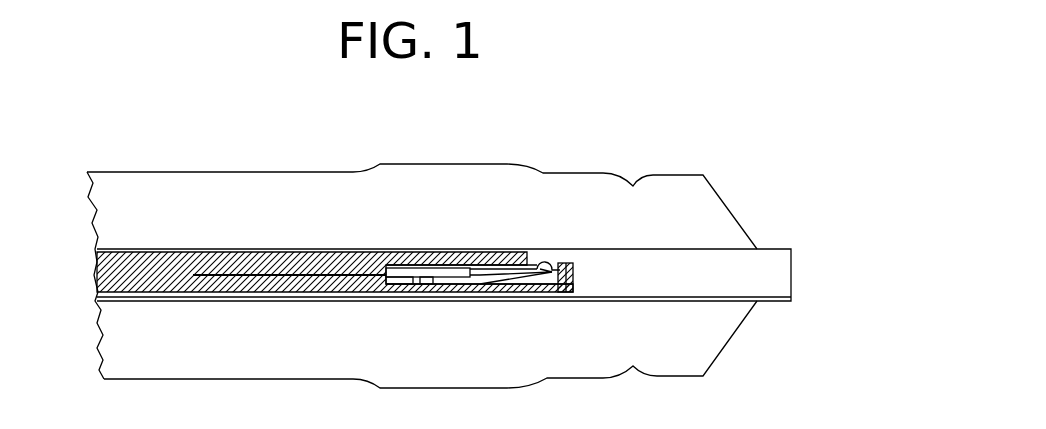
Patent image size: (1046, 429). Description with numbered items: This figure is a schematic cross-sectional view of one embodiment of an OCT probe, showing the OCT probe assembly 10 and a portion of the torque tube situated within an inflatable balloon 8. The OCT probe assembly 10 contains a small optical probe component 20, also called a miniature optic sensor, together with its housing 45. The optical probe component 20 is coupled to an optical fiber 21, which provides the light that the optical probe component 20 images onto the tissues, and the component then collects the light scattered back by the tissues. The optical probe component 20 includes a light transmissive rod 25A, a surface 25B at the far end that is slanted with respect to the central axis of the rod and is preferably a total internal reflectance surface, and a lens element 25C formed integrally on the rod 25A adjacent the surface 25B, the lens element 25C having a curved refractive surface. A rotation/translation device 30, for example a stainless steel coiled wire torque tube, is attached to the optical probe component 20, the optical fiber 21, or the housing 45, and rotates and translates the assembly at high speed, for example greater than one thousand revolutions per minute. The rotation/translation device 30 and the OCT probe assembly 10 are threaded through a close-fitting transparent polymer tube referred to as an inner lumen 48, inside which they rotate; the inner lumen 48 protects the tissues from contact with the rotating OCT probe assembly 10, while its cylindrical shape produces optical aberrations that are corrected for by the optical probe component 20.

The inflatable balloon 8 is at (207, 160).
The OCT probe assembly 10 is at (566, 313).
The optical probe component 20 is at (480, 273).
The optical fiber 21 is at (197, 279).
The light transmissive rod 25A is at (495, 277).
The surface 25B is at (573, 276).
The lens element 25C is at (543, 257).
The rotation/translation device 30 is at (268, 250).
The housing 45 is at (552, 292).
The inner lumen 48 is at (328, 250).